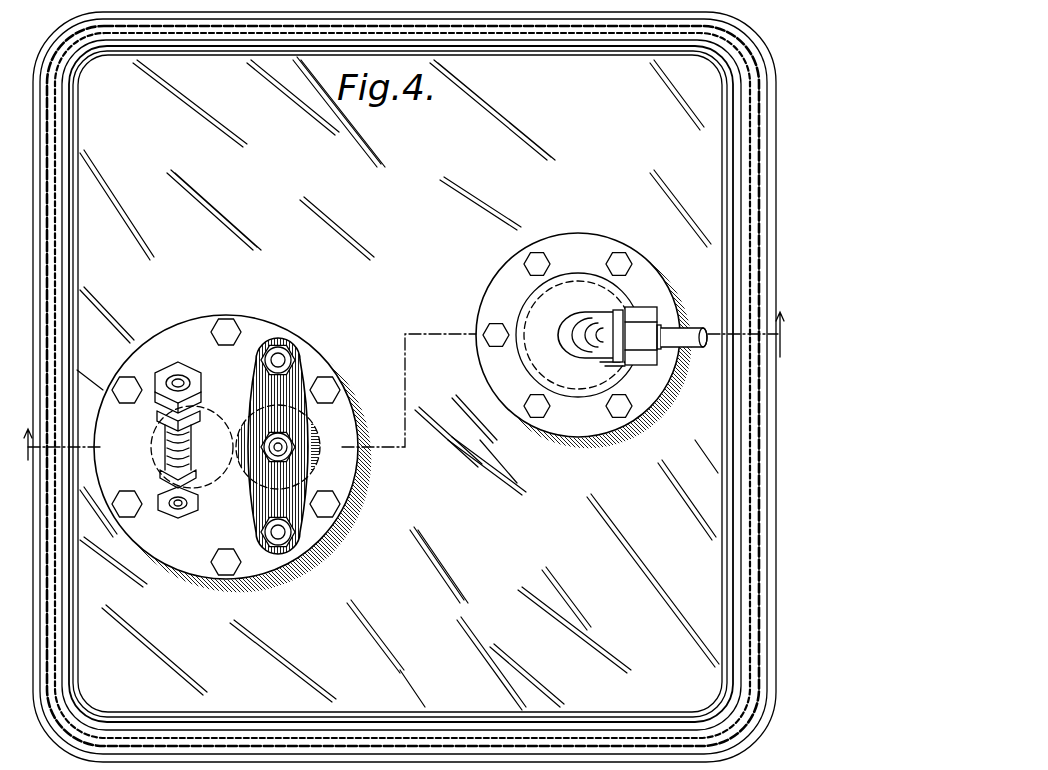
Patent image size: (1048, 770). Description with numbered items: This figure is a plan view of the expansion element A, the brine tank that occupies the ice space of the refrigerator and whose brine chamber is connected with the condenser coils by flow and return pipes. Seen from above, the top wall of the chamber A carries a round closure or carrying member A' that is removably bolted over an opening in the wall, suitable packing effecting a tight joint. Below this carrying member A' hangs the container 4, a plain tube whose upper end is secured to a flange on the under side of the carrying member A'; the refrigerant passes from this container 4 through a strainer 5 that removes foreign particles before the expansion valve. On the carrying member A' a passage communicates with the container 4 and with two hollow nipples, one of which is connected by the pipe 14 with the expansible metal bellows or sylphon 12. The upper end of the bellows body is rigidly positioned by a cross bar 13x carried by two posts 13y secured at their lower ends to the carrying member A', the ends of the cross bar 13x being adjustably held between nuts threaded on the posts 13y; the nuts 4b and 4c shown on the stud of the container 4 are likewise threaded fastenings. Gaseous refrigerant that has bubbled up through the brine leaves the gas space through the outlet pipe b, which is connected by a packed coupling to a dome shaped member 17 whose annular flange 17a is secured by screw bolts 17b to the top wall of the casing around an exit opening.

The container 4 is at (212, 418).
The upper nut of stud 4b is at (170, 432).
The lower nut of stud 4c is at (172, 477).
The bellows or sylphon 12 is at (318, 437).
The cross bar 13x is at (295, 377).
The posts 13y is at (283, 351).
The pipe 14 is at (274, 453).
The dome shaped member 17 is at (530, 358).
The annular flange 17a is at (583, 242).
The screw bolts 17b is at (628, 260).
The outlet pipe b is at (695, 327).
The strainer 5 is at (404, 386).
The brine tank or expansion element A is at (398, 383).
The closure or carrying member A' is at (240, 439).